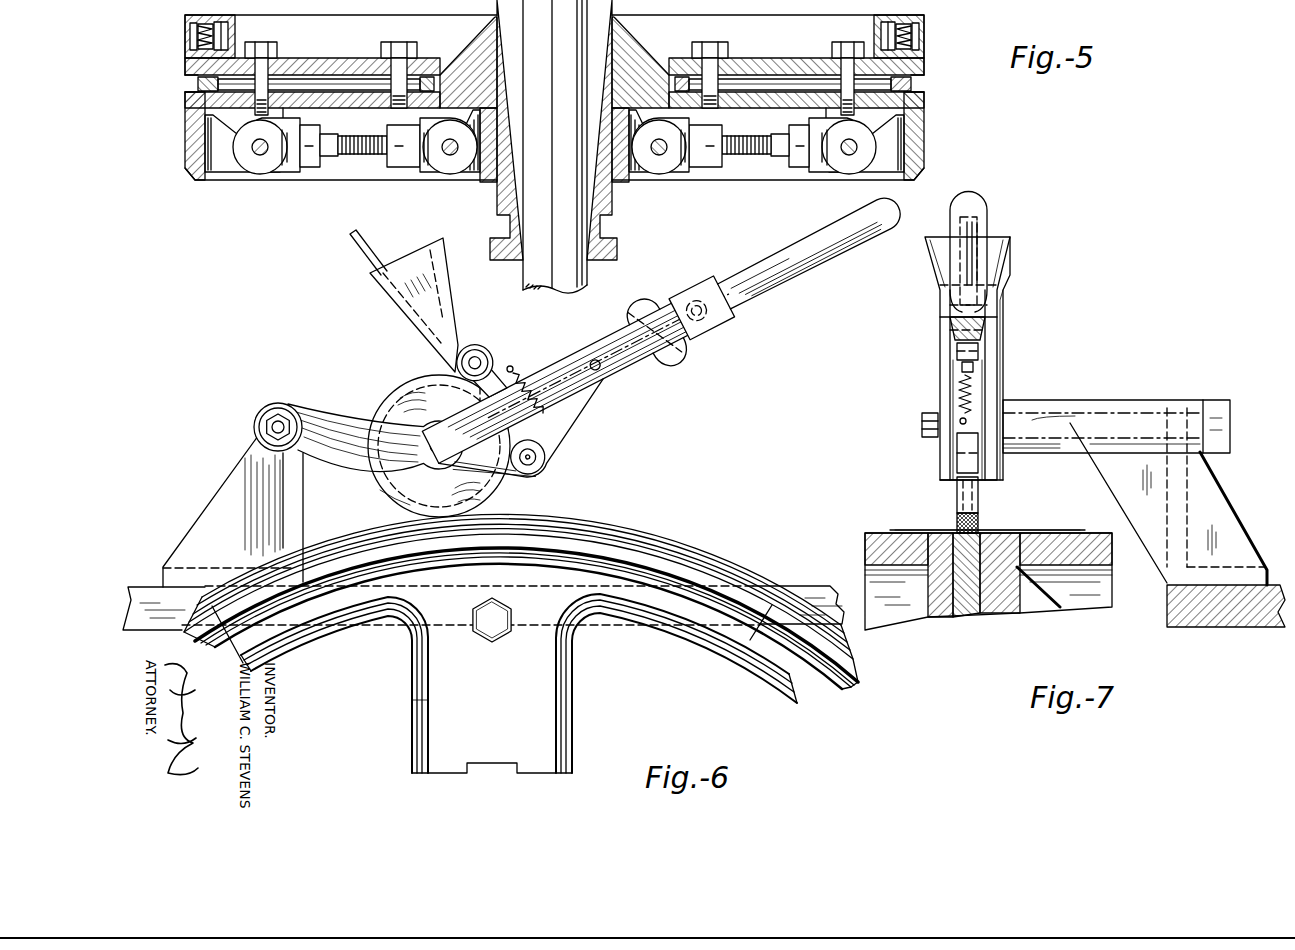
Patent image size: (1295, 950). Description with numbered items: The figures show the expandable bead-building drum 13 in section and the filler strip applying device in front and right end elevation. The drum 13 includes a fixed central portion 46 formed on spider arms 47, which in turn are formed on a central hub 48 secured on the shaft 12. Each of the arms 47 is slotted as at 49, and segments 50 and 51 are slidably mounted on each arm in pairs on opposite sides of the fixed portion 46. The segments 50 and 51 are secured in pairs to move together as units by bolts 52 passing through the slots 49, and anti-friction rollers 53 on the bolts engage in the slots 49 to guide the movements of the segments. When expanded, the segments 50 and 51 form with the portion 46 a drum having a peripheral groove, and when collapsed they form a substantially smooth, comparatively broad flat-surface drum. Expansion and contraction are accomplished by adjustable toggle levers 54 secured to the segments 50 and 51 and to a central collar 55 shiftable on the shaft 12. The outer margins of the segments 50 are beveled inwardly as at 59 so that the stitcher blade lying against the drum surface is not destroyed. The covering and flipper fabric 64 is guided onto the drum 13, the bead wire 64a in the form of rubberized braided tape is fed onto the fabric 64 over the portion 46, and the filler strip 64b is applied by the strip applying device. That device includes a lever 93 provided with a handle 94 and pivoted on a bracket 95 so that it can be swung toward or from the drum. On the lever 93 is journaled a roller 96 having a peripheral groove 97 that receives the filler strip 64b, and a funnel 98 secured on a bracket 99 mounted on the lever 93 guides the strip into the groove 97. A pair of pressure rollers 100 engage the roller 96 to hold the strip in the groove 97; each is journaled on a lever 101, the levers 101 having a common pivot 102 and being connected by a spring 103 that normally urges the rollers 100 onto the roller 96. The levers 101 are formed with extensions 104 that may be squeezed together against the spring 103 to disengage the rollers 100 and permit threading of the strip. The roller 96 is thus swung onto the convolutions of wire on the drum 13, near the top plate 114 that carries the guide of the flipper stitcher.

In FIG. 5, the shaft 12 is at (560, 190).
In FIG. 5, the drum 13 is at (554, 79).
In FIG. 6, the drum 13 is at (853, 681).
In FIG. 7, the drum 13 is at (885, 533).
In FIG. 5, the fixed central portion 46 is at (200, 85).
In FIG. 7, the fixed central portion 46 is at (979, 542).
In FIG. 5, the spider arms 47 is at (445, 77).
In FIG. 6, the spider arms 47 is at (420, 709).
In FIG. 5, the central hub 48 is at (598, 48).
In FIG. 5, the slots 49 is at (331, 77).
In FIG. 6, the slots 49 is at (491, 767).
In FIG. 5, the segments 50 is at (196, 140).
In FIG. 7, the segments 50 is at (1080, 547).
In FIG. 5, the segments 51 is at (187, 67).
In FIG. 6, the segments 51 is at (440, 633).
In FIG. 7, the segments 51 is at (866, 548).
In FIG. 5, the bolts 52 is at (274, 58).
In FIG. 6, the bolts 52 is at (489, 630).
In FIG. 5, the anti-friction rollers 53 is at (554, 85).
In FIG. 5, the adjustable toggle levers 54 is at (370, 158).
In FIG. 5, the central collar 55 is at (500, 176).
In FIG. 5, the beveled outer margins 59 is at (193, 179).
In FIG. 7, the beveled outer margins 59 is at (1097, 536).
In FIG. 6, the covering and flipper fabric 64 is at (620, 543).
In FIG. 7, the covering and flipper fabric 64 is at (1043, 533).
In FIG. 6, the bead wire 64a is at (577, 533).
In FIG. 7, the bead wire 64a is at (957, 528).
In FIG. 6, the filler strip 64b is at (370, 260).
In FIG. 7, the filler strip 64b is at (982, 223).
In FIG. 6, the lever 93 is at (338, 440).
In FIG. 7, the lever 93 is at (995, 247).
In FIG. 6, the handle 94 is at (808, 262).
In FIG. 7, the handle 94 is at (972, 204).
In FIG. 6, the bracket 95 is at (228, 497).
In FIG. 7, the bracket 95 is at (1208, 506).
In FIG. 6, the roller 96 is at (403, 493).
In FIG. 7, the roller 96 is at (956, 492).
In FIG. 6, the peripheral groove 97 is at (404, 391).
In FIG. 6, the funnel 98 is at (433, 286).
In FIG. 6, the bracket 99 is at (467, 345).
In FIG. 7, the bracket 99 is at (1008, 268).
In FIG. 6, the pressure rollers 100 is at (478, 352).
In FIG. 7, the pressure rollers 100 is at (958, 353).
In FIG. 6, the levers 101 is at (550, 358).
In FIG. 7, the levers 101 is at (978, 370).
In FIG. 6, the common pivot 102 is at (600, 371).
In FIG. 7, the common pivot 102 is at (968, 367).
In FIG. 6, the spring 103 is at (516, 378).
In FIG. 7, the spring 103 is at (962, 401).
In FIG. 6, the extensions 104 is at (638, 312).
In FIG. 7, the extensions 104 is at (995, 308).
In FIG. 6, the top plate 114 is at (808, 592).
In FIG. 7, the top plate 114 is at (1180, 610).